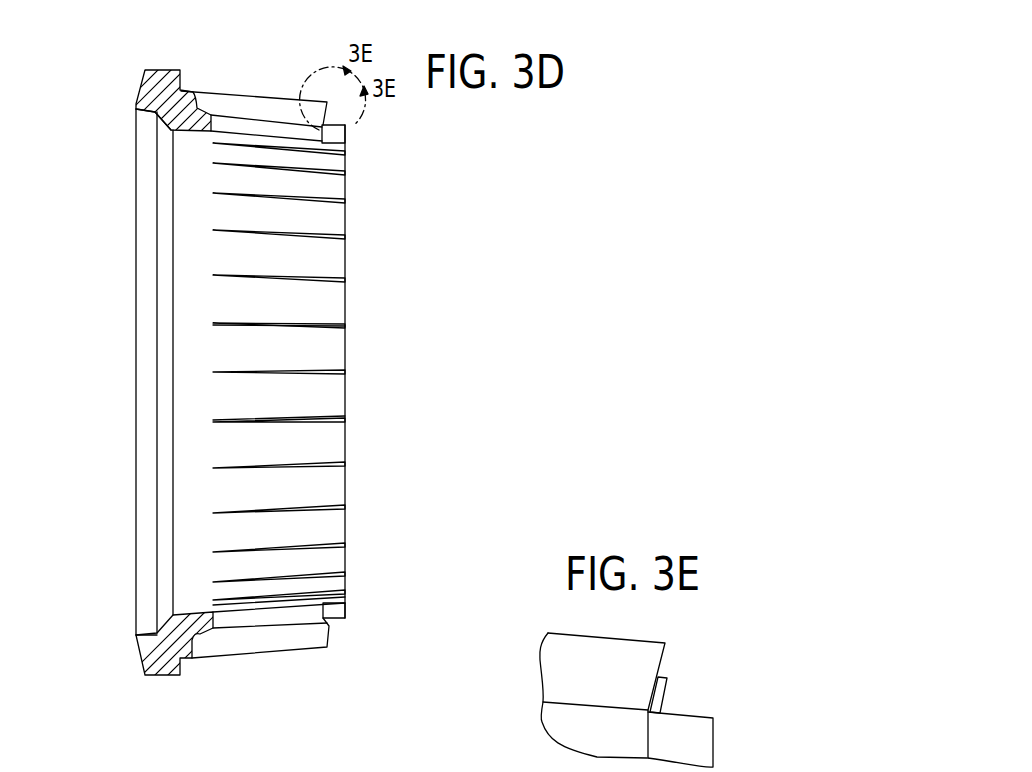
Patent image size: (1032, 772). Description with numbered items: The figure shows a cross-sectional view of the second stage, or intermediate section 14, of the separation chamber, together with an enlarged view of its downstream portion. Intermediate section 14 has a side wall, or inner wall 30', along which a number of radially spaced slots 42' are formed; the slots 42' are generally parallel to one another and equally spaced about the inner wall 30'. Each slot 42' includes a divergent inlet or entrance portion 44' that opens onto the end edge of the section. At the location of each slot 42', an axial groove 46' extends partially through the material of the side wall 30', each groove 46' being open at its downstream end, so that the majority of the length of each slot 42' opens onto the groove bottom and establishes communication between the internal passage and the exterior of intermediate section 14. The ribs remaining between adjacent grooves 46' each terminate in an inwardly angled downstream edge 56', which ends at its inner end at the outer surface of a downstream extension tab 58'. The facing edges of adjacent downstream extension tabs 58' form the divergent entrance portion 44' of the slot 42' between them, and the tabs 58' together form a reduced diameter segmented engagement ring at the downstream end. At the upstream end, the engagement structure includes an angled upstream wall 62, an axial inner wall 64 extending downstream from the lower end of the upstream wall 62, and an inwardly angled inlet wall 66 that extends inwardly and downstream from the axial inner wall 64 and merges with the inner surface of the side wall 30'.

In FIG. 3D, the intermediate section 14 is at (123, 560).
In FIG. 3D, the inner wall 30' is at (116, 649).
In FIG. 3D, the slot 42' is at (326, 369).
In FIG. 3D, the divergent inlet or entrance portion 44' is at (333, 374).
In FIG. 3D, the axial groove 46' is at (216, 366).
In FIG. 3D, the angled upstream wall 62 is at (140, 92).
In FIG. 3D, the axial inner wall 64 is at (147, 115).
In FIG. 3D, the inwardly angled inlet wall 66 is at (164, 128).
In FIG. 3E, the inwardly angled downstream edge 56' is at (657, 669).
In FIG. 3E, the downstream extension tab 58' is at (730, 695).